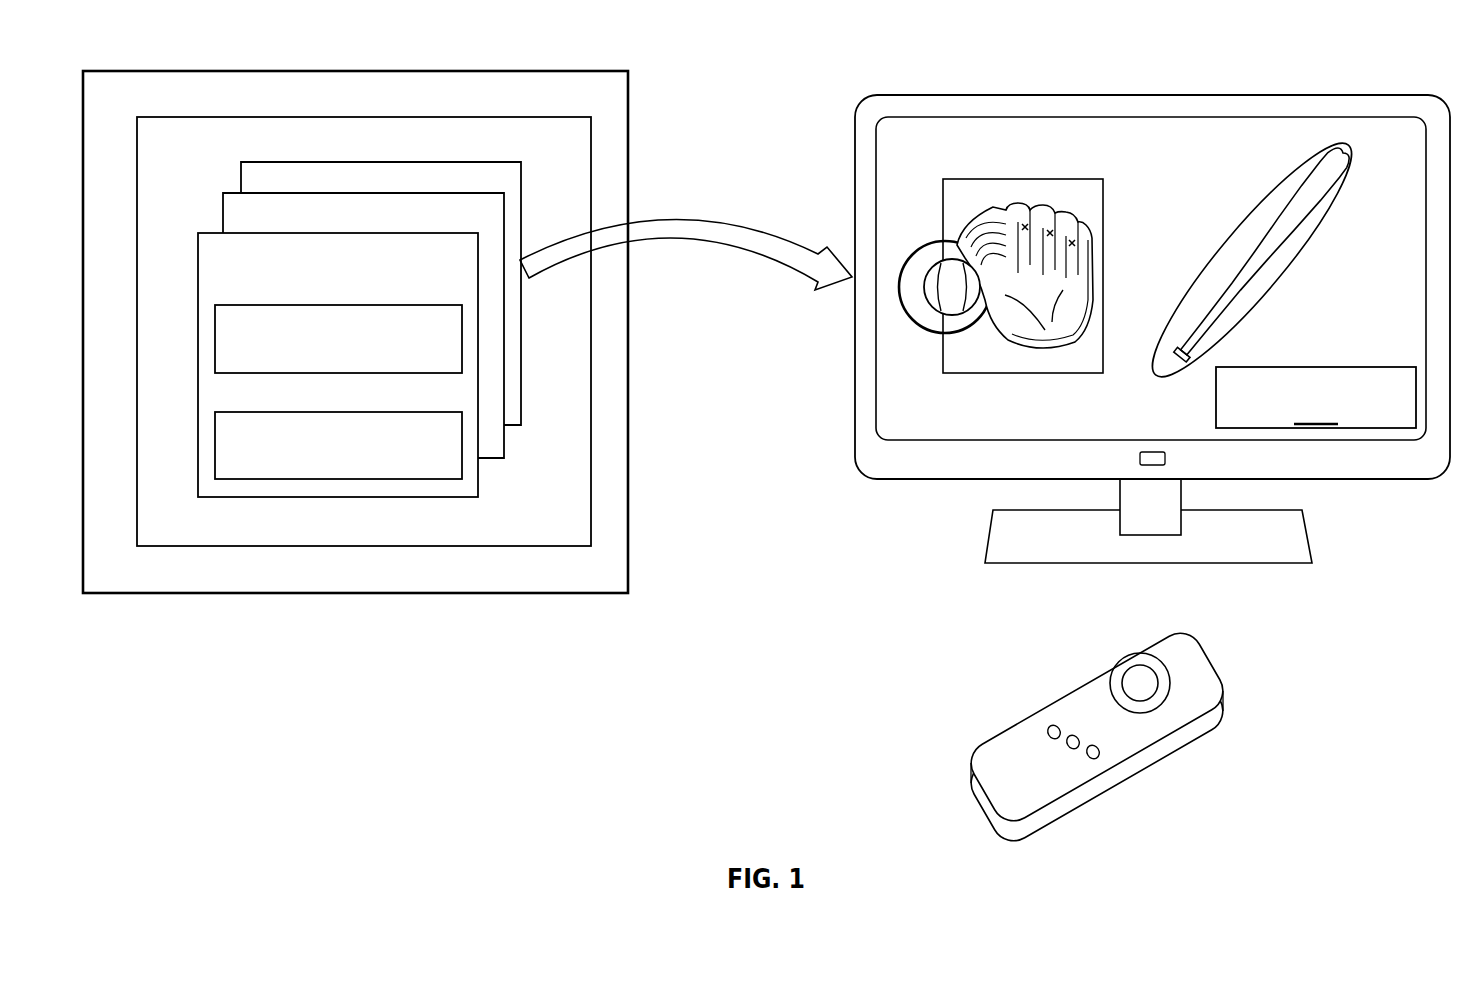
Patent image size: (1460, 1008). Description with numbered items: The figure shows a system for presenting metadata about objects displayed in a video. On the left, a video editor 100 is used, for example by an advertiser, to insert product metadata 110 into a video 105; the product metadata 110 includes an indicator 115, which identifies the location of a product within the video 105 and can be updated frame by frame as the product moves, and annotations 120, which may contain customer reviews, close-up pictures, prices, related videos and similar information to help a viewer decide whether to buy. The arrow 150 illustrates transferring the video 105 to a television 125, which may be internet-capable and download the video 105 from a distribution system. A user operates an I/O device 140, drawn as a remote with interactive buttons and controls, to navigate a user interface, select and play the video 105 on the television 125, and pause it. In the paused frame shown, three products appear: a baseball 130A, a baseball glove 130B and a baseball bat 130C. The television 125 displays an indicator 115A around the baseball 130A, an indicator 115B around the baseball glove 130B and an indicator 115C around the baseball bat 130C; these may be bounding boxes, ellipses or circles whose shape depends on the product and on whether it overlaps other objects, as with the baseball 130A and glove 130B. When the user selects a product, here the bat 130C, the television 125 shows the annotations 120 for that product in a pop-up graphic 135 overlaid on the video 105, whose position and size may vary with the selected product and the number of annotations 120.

The video editor 100 is at (562, 71).
The video 105 is at (520, 117).
The product metadata 110 is at (428, 233).
The indicator 115 is at (405, 305).
The annotations 120 is at (405, 412).
The television 125 is at (1297, 97).
The baseball 130A is at (921, 256).
The baseball glove 130B is at (1100, 250).
The baseball bat 130C is at (1322, 158).
The indicator for baseball 115A is at (935, 334).
The indicator for baseball glove 115B is at (1023, 377).
The indicator for baseball bat 115C is at (1272, 192).
The pop-up graphic 135 is at (1316, 428).
The I/O device 140 is at (1222, 680).
The arrow 150 is at (687, 218).